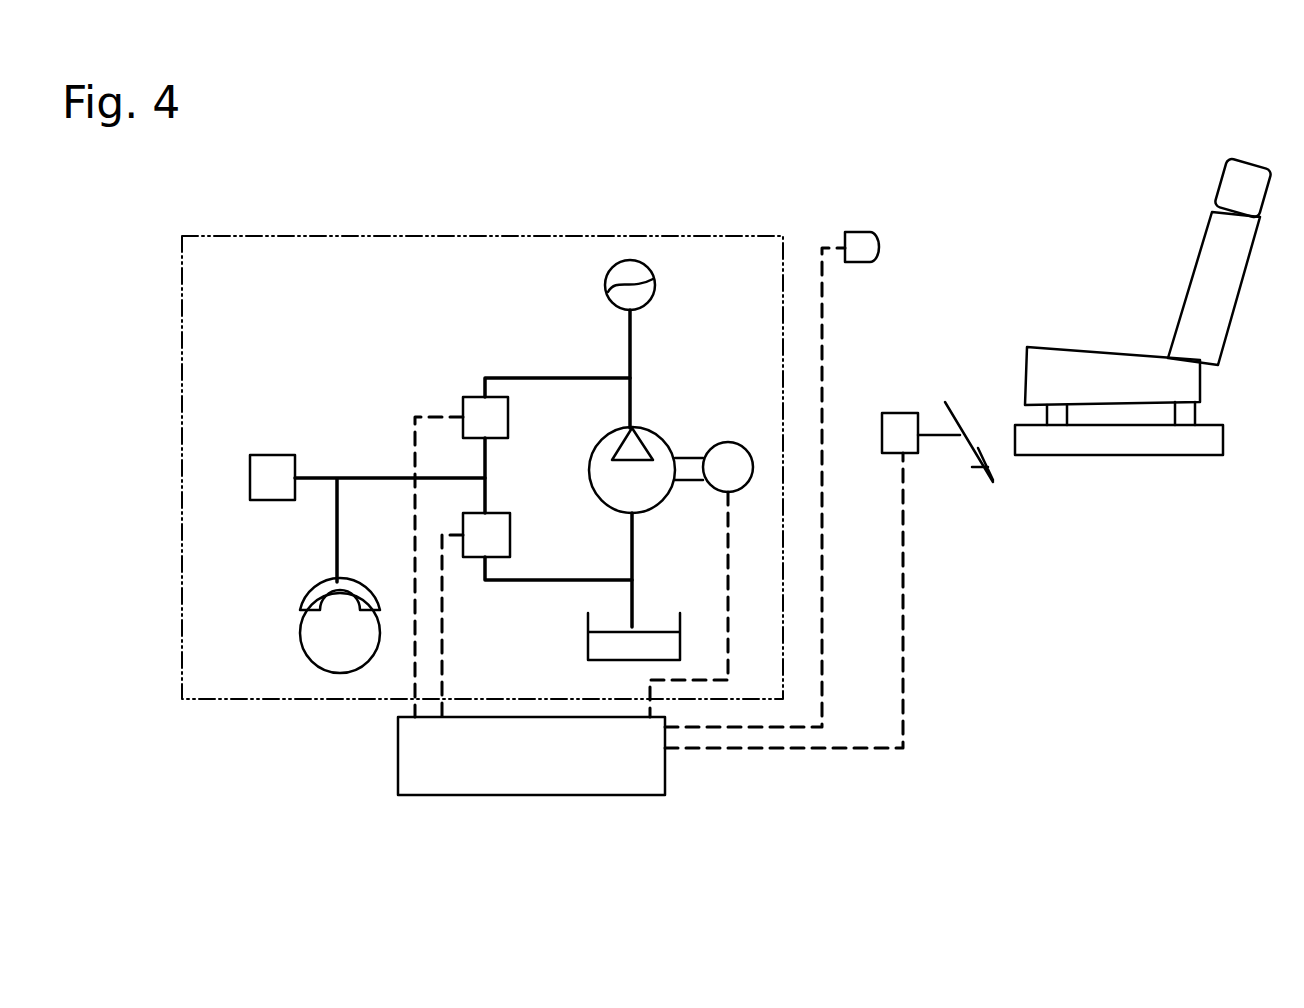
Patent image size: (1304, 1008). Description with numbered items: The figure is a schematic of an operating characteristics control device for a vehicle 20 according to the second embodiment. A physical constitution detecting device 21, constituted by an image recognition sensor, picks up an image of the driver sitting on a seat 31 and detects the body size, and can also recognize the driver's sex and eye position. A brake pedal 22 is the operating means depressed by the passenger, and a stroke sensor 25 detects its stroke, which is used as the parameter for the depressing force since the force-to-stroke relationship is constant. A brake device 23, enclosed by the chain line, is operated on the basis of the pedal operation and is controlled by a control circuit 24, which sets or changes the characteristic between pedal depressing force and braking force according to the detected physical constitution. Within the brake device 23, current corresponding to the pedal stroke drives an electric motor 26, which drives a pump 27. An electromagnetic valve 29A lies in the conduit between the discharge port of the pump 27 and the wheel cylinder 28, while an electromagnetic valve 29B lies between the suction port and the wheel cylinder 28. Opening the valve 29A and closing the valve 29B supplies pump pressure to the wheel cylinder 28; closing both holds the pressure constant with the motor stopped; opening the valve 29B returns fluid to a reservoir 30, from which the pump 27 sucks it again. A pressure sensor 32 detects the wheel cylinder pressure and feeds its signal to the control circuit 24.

The operating characteristics control device for a vehicle 20 is at (941, 129).
The physical constitution detecting device 21 is at (873, 248).
The brake pedal 22 is at (963, 452).
The brake device 23 is at (497, 235).
The control circuit 24 is at (548, 782).
The stroke sensor 25 is at (902, 427).
The electric motor 26 is at (725, 447).
The pump 27 is at (597, 490).
The wheel cylinder 28 is at (313, 598).
The electromagnetic valve 29A is at (472, 407).
The electromagnetic valve 29B is at (480, 547).
The reservoir 30 is at (680, 643).
The seat 31 is at (1193, 313).
The pressure sensor 32 is at (278, 462).